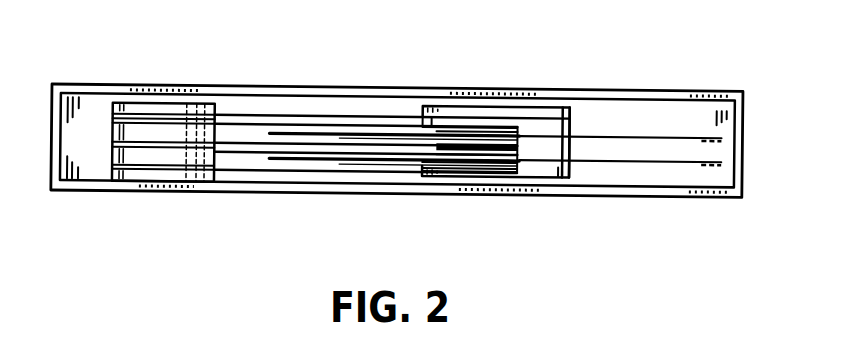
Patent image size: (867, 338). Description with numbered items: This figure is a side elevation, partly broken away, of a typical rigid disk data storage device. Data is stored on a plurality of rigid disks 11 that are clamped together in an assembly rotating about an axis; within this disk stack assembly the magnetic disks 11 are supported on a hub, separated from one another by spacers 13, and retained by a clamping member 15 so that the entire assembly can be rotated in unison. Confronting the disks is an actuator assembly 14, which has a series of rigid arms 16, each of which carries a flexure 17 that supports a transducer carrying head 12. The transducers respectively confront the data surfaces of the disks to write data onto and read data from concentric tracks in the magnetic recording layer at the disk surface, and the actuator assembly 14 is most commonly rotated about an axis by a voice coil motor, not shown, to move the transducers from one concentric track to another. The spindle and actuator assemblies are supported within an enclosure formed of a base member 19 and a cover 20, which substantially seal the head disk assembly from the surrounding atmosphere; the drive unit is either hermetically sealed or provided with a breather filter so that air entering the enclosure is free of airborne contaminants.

The rigid disks 11 is at (708, 160).
The transducer carrying head 12 is at (522, 133).
The spacers 13 is at (532, 150).
The actuator assembly 14 is at (158, 158).
The clamping member 15 is at (568, 106).
The rigid arms 16 is at (240, 172).
The flexure 17 is at (461, 166).
The base member 19 is at (705, 197).
The cover 20 is at (663, 90).